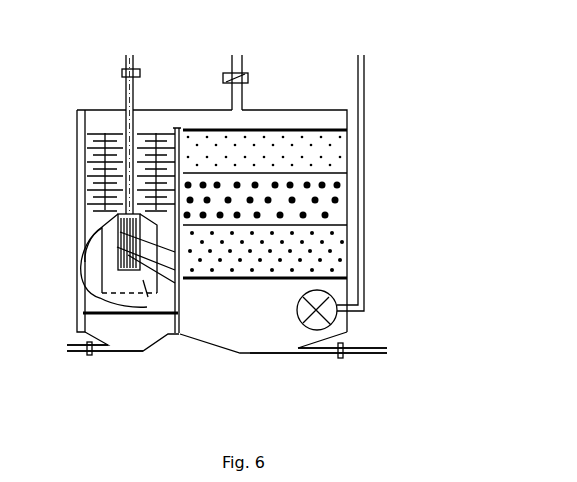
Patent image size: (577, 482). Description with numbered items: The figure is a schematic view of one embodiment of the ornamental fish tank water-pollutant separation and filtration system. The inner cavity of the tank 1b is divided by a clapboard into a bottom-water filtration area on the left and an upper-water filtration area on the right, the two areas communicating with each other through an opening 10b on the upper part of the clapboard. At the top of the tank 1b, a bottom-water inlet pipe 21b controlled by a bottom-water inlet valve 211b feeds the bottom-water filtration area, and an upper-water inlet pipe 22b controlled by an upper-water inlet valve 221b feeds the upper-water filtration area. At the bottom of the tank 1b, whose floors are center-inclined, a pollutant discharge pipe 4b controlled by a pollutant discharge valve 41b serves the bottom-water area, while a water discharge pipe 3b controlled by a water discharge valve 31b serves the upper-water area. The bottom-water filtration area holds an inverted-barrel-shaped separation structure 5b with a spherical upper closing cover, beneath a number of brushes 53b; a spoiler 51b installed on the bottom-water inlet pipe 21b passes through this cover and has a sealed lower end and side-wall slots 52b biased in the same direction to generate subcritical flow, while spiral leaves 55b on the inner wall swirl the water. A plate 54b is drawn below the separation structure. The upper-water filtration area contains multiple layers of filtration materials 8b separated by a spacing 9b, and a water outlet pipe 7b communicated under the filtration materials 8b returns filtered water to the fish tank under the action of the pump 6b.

The tank 1b is at (76, 137).
The bottom-water inlet pipe 21b is at (126, 60).
The bottom-water inlet valve 211b is at (122, 75).
The upper-water inlet pipe 22b is at (232, 62).
The upper-water inlet valve 221b is at (227, 80).
The opening 10b is at (178, 116).
The water outlet pipe 7b is at (363, 92).
The spacing 9b is at (347, 132).
The filtration materials 8b is at (325, 250).
The brushes 53b is at (85, 193).
The separation structure 5b is at (99, 266).
The spoiler 51b is at (118, 240).
The slots 52b is at (115, 248).
The support plate 54b is at (100, 313).
The spiral leaves 55b is at (145, 280).
The pollutant discharge pipe 4b is at (82, 346).
The pollutant discharge valve 41b is at (92, 355).
The pump 6b is at (348, 313).
The water discharge pipe 3b is at (343, 350).
The water discharge valve 31b is at (342, 358).